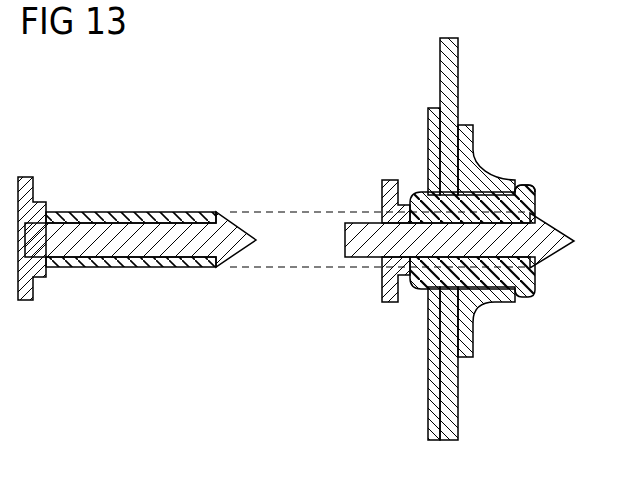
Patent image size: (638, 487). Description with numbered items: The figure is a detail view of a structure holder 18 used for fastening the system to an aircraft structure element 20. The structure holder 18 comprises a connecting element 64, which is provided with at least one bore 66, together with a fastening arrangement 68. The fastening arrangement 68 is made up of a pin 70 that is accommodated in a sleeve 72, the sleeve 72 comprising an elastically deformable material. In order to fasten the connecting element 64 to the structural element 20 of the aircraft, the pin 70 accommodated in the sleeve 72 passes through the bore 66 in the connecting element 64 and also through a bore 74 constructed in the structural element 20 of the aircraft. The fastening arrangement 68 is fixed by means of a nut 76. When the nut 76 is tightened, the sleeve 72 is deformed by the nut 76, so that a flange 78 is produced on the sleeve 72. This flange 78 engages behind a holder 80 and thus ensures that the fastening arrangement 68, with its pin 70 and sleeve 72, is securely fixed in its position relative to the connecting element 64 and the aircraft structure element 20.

The structure holder 18 is at (250, 87).
The aircraft structure element 20 is at (445, 70).
The connecting element 64 is at (430, 118).
The bore 66 is at (418, 290).
The fastening arrangement 68 is at (93, 284).
The pin 70 is at (116, 232).
The sleeve 72 is at (136, 268).
The bore 74 is at (466, 198).
The nut 76 is at (31, 177).
The flange 78 is at (531, 188).
The holder 80 is at (473, 130).